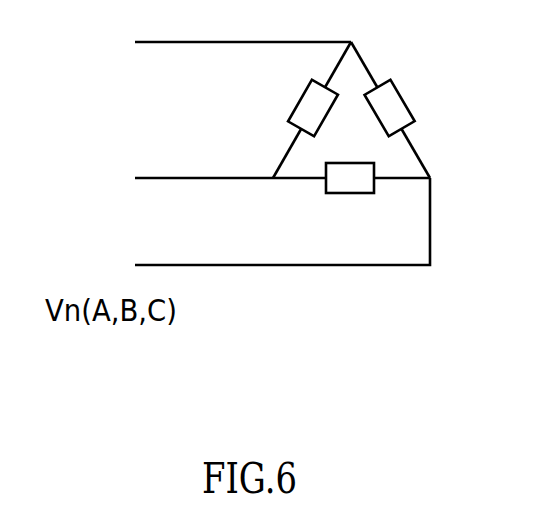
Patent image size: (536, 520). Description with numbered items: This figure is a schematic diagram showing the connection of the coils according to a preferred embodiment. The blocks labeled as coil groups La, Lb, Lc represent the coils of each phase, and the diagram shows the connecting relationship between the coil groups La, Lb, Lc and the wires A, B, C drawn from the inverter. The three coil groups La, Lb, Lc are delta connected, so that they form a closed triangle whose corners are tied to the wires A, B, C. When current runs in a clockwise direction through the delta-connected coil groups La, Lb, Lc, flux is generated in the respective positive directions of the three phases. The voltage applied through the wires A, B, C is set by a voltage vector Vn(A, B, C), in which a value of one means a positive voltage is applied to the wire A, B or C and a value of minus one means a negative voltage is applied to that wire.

The coil group La is at (350, 199).
The coil group Lb is at (399, 110).
The coil group Lc is at (301, 110).
The wire A is at (264, 227).
The wire B is at (263, 165).
The wire C is at (224, 32).